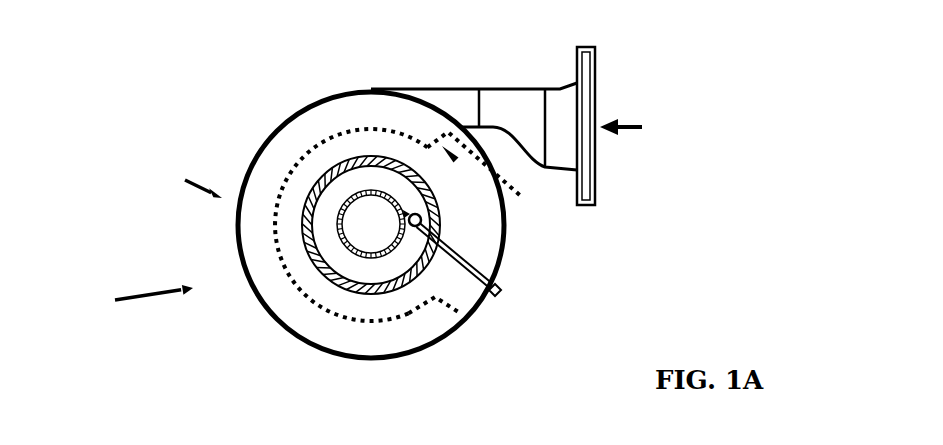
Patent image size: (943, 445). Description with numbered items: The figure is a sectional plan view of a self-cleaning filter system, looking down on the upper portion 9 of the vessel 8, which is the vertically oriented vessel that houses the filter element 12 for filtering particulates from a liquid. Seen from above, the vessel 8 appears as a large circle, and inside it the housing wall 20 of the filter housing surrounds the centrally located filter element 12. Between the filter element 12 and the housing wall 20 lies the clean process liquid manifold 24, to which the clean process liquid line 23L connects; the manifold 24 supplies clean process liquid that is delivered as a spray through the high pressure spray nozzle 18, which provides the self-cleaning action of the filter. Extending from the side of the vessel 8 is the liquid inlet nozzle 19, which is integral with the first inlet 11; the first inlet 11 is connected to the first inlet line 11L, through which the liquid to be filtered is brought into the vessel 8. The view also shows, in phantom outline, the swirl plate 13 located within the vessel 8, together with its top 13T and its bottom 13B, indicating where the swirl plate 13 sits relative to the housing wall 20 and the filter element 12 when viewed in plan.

The vessel 8 is at (137, 299).
The upper portion 9 is at (183, 178).
The first inlet 11 is at (595, 52).
The first inlet line 11L is at (654, 103).
The filter element 12 is at (347, 250).
The swirl plate 13 is at (288, 153).
The top of swirl plate 13T is at (501, 172).
The bottom of swirl plate 13B is at (436, 332).
The high pressure spray nozzle 18 is at (402, 249).
The liquid inlet nozzle 19 is at (473, 78).
The housing wall 20 is at (385, 160).
The clean process liquid line 23L is at (494, 272).
The clean process liquid manifold 24 is at (416, 254).